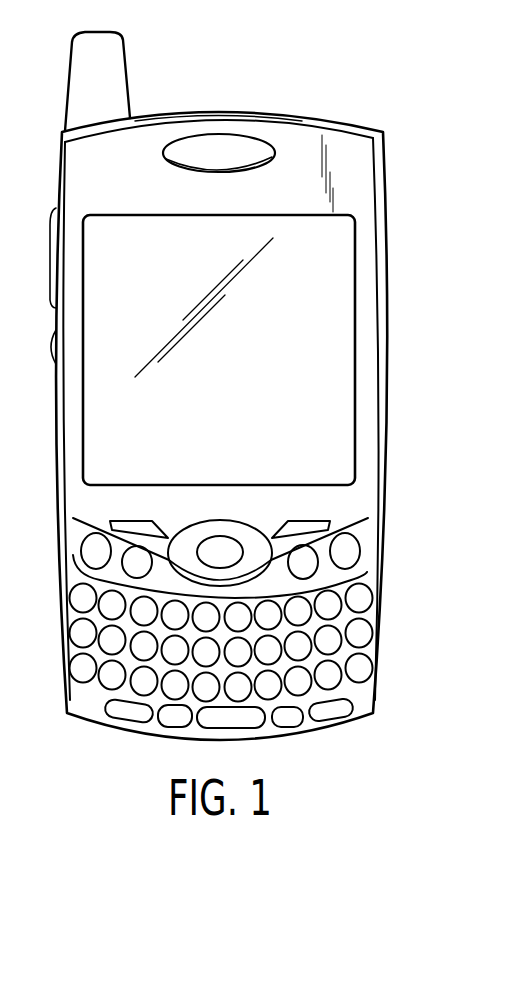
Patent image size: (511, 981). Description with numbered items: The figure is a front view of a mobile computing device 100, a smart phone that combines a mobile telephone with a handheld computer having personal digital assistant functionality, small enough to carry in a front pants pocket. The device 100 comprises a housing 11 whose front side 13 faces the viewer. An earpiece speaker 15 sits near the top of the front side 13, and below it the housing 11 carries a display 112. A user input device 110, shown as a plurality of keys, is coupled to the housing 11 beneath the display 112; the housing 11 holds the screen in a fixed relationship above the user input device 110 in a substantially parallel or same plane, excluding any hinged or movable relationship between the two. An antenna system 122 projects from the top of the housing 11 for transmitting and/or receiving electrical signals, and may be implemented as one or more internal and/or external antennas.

The mobile computing device 100 is at (256, 384).
The housing 11 is at (350, 162).
The antenna system 122 is at (130, 82).
The earpiece speaker 15 is at (218, 152).
The front side 13 is at (121, 188).
The display 112 is at (338, 310).
The user input device 110 is at (360, 635).